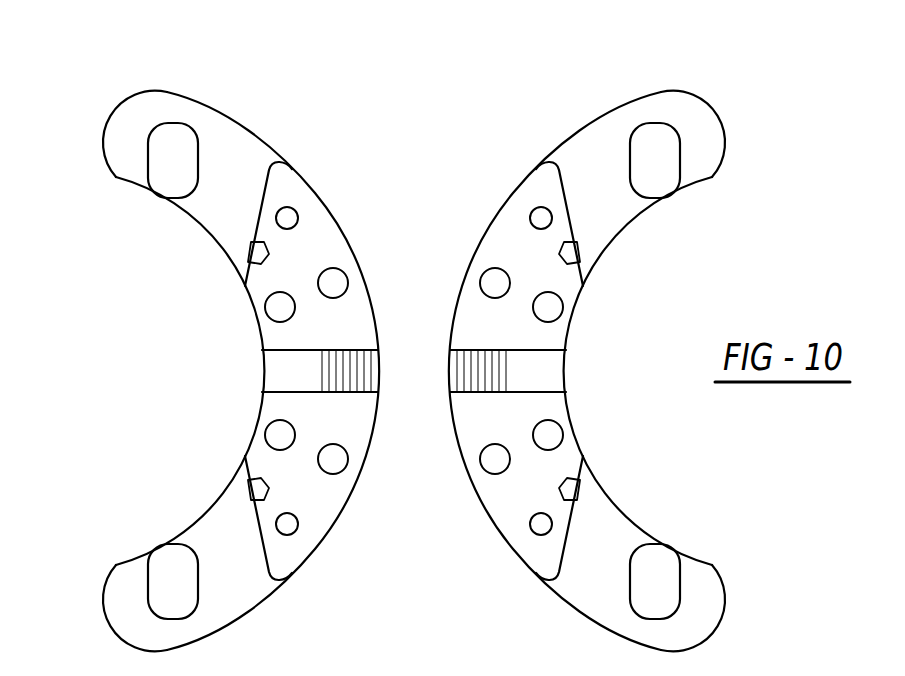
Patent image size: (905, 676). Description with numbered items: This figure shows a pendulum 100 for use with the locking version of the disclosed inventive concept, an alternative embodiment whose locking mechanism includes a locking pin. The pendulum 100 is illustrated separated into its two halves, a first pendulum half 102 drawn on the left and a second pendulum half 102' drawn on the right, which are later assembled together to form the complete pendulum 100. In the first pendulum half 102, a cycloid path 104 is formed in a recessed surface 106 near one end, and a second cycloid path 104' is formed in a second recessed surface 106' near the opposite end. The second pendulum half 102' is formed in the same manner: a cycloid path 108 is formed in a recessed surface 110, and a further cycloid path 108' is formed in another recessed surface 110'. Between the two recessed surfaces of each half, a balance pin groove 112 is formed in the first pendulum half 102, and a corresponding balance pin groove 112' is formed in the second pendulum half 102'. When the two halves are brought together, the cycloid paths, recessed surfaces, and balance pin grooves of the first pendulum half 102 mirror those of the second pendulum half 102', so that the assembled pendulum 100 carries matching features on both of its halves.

The pendulum 100 is at (707, 85).
The first pendulum half 102 is at (128, 170).
The second pendulum half 102' is at (720, 167).
The cycloid path 104 is at (114, 147).
The cycloid path 104' is at (118, 587).
The recessed surface 106 is at (300, 384).
The recessed surface 106' is at (215, 620).
The cycloid path 108 is at (720, 141).
The cycloid path 108' is at (713, 561).
The recessed surface 110 is at (580, 366).
The recessed surface 110' is at (638, 620).
The balance pin groove 112 is at (261, 382).
The balance pin groove 112' is at (569, 373).